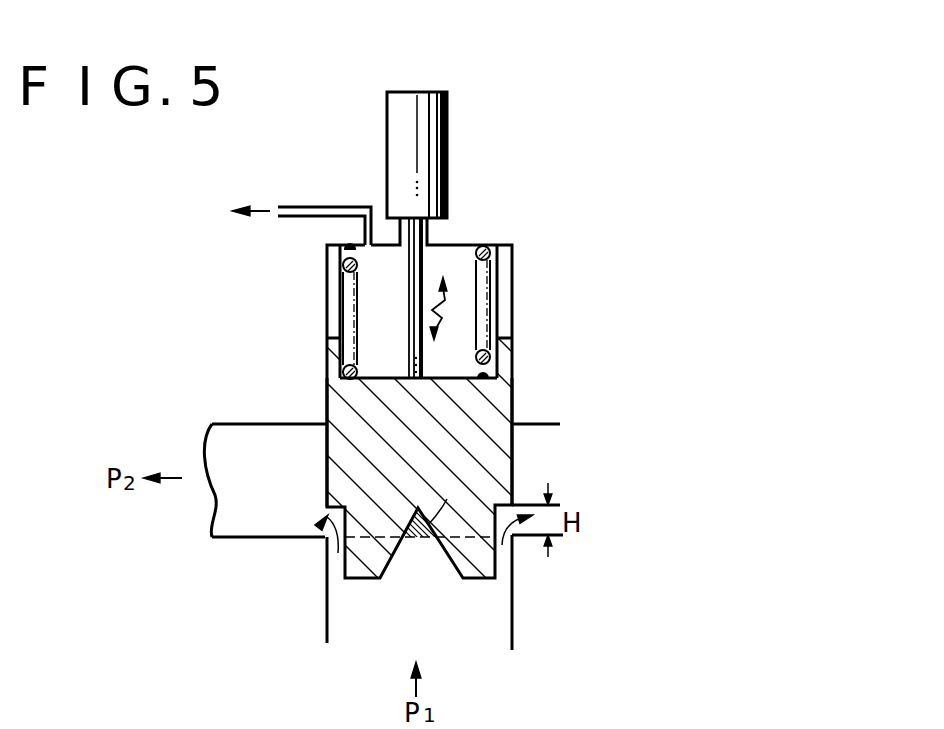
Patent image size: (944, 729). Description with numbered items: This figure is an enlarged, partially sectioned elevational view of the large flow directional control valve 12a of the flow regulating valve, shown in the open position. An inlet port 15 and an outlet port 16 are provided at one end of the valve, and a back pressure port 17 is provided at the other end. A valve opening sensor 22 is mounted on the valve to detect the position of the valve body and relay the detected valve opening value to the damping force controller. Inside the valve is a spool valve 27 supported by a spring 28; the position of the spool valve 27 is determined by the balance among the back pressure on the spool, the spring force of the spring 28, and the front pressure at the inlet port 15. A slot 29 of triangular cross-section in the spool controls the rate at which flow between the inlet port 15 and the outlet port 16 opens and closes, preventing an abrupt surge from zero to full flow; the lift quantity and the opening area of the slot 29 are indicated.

The large flow directional control valve 12a is at (522, 247).
The inlet port 15 is at (453, 628).
The outlet port 16 is at (247, 512).
The back pressure port 17 is at (320, 205).
The valve opening sensor 22 is at (447, 140).
The spool valve 27 is at (492, 448).
The spring 28 is at (342, 268).
The slot 29 is at (323, 527).